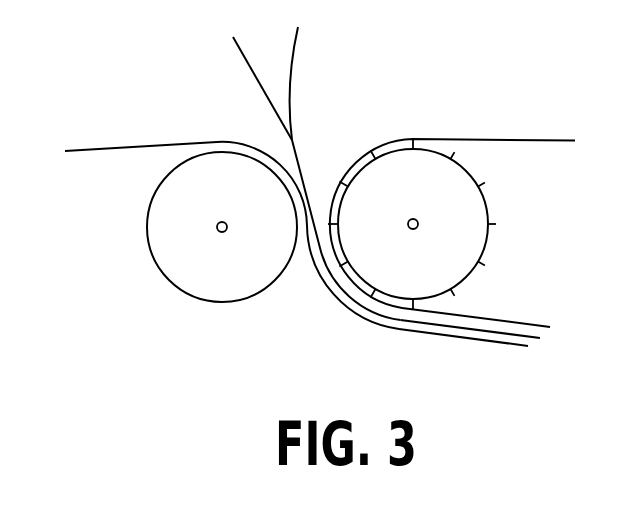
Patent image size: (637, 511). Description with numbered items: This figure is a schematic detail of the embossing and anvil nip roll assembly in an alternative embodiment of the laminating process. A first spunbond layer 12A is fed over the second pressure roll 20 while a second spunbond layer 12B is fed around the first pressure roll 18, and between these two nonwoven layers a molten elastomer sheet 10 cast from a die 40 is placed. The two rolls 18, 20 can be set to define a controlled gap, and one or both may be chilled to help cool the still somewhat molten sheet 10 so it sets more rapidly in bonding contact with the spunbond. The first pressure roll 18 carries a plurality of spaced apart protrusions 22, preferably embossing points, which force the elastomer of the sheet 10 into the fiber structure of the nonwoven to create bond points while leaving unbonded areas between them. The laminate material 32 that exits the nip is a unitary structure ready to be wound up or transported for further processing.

The first spunbond layer 12A is at (132, 147).
The second spunbond layer 12B is at (423, 141).
The sheet 10 is at (292, 140).
The die 40 is at (293, 65).
The second pressure roll 20 is at (170, 281).
The first pressure roll 18 is at (460, 218).
The protrusions 22 is at (453, 154).
The laminate material 32 is at (489, 342).